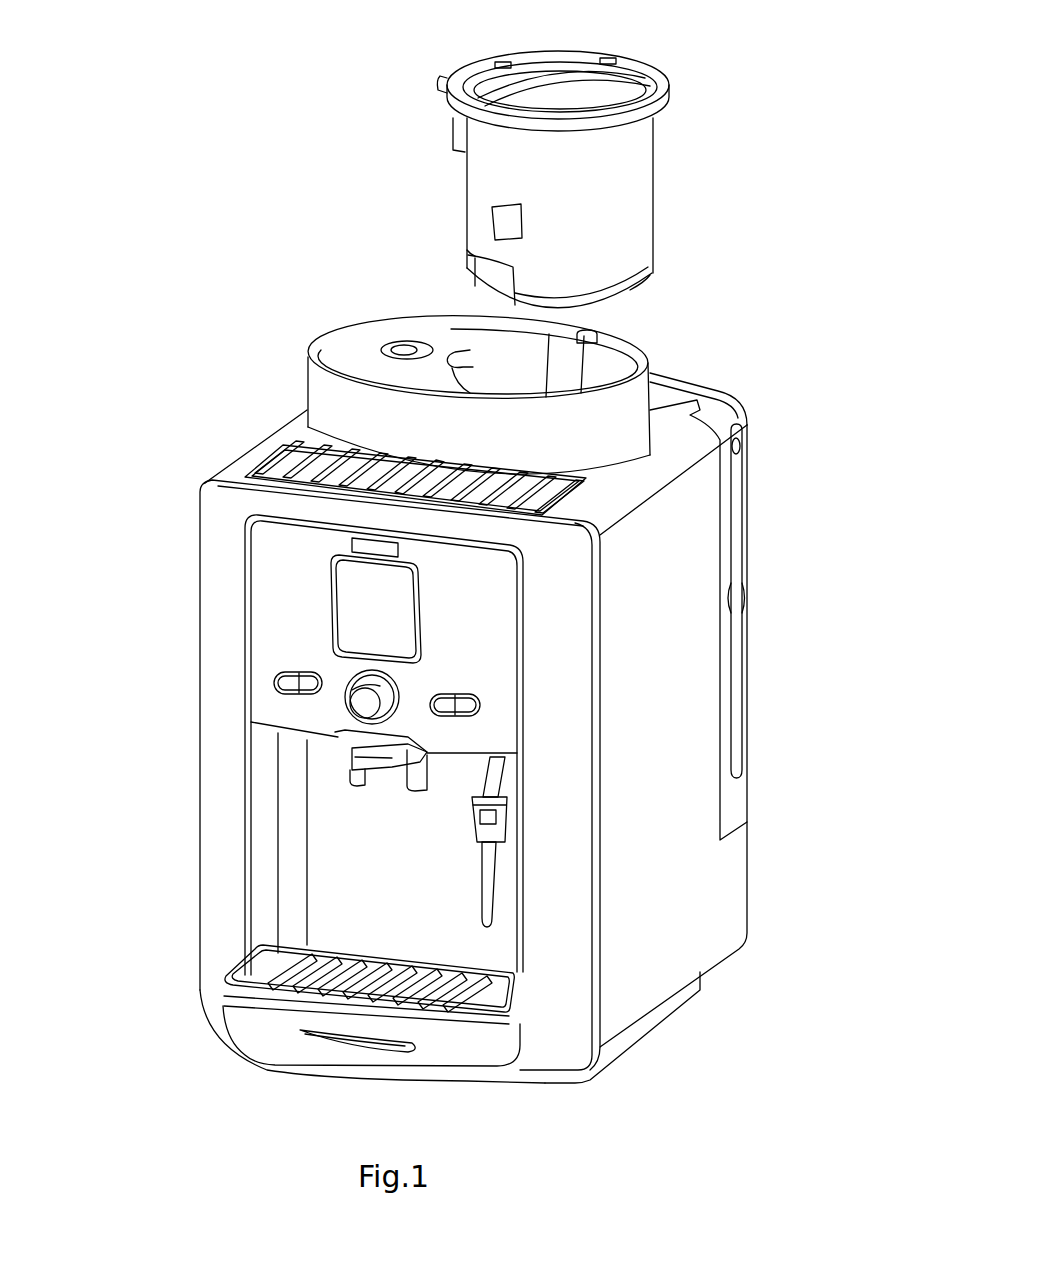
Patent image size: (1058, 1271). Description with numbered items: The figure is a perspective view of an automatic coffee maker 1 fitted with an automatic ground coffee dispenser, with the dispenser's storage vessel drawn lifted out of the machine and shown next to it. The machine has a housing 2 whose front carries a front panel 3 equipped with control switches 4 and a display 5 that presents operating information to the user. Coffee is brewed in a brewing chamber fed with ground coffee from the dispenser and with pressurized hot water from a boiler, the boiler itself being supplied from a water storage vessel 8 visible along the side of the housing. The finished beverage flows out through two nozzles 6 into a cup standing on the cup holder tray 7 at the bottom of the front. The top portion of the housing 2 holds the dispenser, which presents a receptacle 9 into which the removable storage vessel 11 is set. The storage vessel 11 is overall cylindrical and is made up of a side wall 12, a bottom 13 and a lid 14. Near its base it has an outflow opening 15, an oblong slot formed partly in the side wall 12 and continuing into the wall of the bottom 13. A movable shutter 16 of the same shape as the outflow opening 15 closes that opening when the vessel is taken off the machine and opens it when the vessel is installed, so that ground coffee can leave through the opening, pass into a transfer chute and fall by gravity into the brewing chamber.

The automatic coffee maker 1 is at (197, 282).
The housing 2 is at (680, 454).
The front panel 3 is at (258, 622).
The control switches 4 is at (345, 698).
The display 5 is at (352, 583).
The nozzles 6 is at (338, 773).
The cup holder tray 7 is at (250, 970).
The water storage vessel 8 is at (752, 590).
The receptacle 9 is at (600, 367).
The storage vessel 11 is at (492, 177).
The side wall 12 is at (660, 128).
The bottom 13 is at (640, 295).
The lid 14 is at (600, 78).
The outflow opening 15 is at (516, 259).
The movable shutter 16 is at (482, 281).